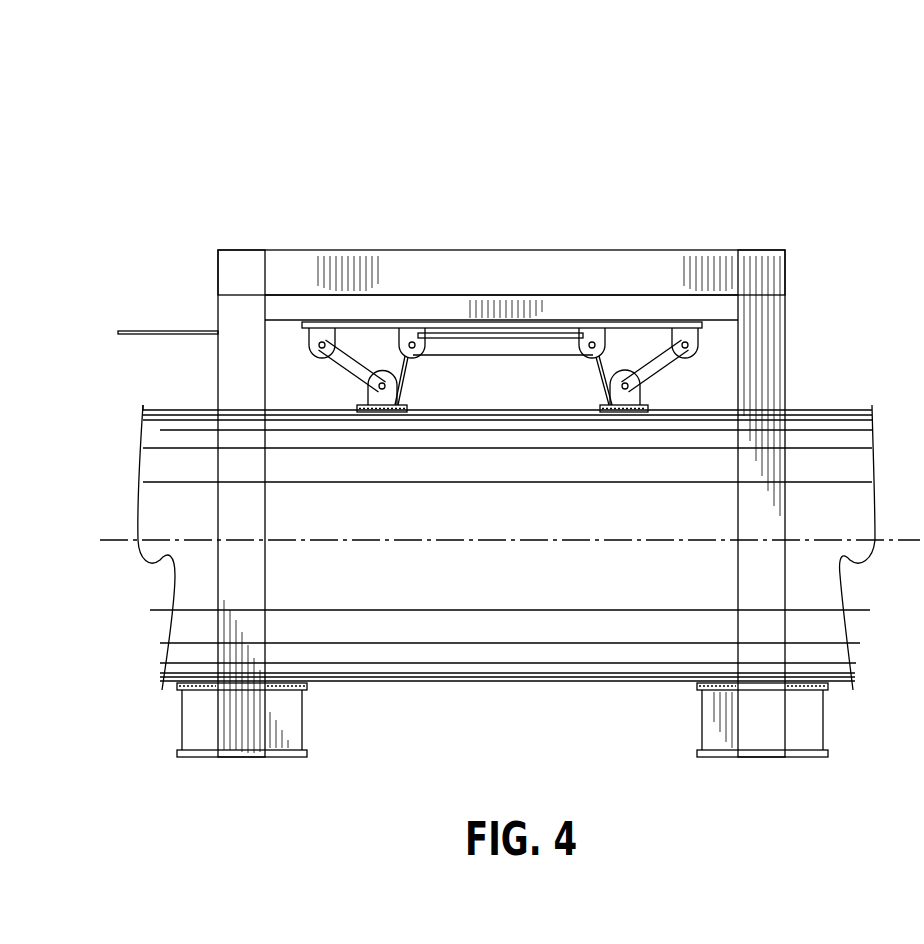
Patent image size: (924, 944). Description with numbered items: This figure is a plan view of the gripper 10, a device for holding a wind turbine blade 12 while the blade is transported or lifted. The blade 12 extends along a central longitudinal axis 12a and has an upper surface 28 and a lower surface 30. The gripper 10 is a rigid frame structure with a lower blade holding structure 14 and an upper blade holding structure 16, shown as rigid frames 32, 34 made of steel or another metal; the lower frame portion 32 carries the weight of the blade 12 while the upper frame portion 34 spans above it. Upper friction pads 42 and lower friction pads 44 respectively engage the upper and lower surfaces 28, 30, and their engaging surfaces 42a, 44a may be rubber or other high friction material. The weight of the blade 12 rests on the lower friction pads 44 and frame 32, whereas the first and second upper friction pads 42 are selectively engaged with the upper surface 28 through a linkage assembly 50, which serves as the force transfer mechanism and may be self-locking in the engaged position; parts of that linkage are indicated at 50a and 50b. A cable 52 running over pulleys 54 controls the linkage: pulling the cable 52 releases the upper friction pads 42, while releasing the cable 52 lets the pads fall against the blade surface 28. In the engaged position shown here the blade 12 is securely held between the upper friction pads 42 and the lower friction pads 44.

The gripper 10 is at (786, 208).
The wind turbine blade 12 is at (512, 563).
The central longitudinal axis 12a is at (895, 538).
The lower blade holding structure 14 is at (825, 728).
The upper blade holding structure 16 is at (532, 504).
The upper surface 28 is at (184, 427).
The lower surface 30 is at (535, 675).
The lower frame portion 32 is at (238, 748).
The upper frame portion 34 is at (670, 262).
The upper friction pads 42 is at (482, 447).
The upper friction pad surfaces 42a is at (393, 412).
The lower friction pads 44 is at (502, 719).
The lower friction pad surfaces 44a is at (293, 683).
The linkage assembly 50 is at (568, 372).
The upper link pivot 50a is at (702, 350).
The lower link 50b is at (348, 378).
The cable 52 is at (150, 333).
The pulleys 54 is at (580, 281).